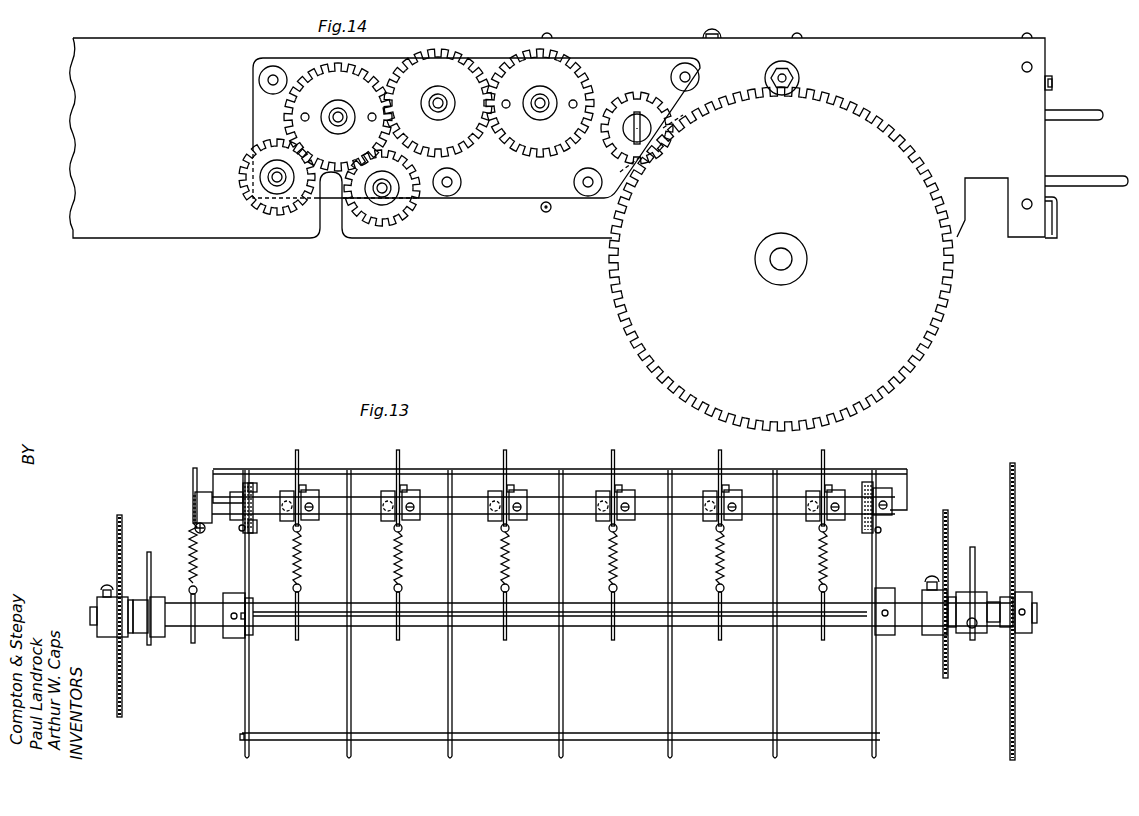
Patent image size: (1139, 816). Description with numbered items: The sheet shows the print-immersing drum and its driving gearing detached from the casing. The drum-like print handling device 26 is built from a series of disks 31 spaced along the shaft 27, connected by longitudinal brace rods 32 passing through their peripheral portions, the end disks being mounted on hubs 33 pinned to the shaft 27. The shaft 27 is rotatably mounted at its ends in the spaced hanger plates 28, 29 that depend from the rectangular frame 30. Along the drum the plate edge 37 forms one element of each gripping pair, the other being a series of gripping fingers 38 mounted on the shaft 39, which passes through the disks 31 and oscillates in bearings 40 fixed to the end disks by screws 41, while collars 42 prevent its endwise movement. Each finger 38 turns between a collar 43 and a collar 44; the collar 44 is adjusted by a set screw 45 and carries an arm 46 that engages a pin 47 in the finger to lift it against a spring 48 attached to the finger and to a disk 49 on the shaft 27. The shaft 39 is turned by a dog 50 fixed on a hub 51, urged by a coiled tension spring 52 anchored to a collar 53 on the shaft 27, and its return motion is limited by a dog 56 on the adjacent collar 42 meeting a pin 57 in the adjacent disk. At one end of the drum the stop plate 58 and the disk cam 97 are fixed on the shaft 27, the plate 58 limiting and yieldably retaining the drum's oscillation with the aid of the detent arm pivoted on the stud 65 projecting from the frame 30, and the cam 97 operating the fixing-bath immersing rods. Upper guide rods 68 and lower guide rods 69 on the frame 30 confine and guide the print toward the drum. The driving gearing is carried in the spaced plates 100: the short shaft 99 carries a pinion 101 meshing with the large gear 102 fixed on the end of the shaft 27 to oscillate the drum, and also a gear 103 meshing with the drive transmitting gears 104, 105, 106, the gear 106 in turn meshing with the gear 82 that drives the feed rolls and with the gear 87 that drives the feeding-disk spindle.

In FIG. 14, the rectangular frame 30 is at (1042, 52).
In FIG. 14, the spaced plates 100 is at (262, 100).
In FIG. 14, the drive transmitting gear 106 is at (340, 78).
In FIG. 14, the drive transmitting gear 105 is at (455, 76).
In FIG. 14, the drive transmitting gear 104 is at (572, 75).
In FIG. 14, the gear 103 is at (672, 82).
In FIG. 14, the pinion 101 is at (640, 112).
In FIG. 14, the short shaft 99 is at (630, 137).
In FIG. 14, the gear 87 is at (244, 172).
In FIG. 14, the gear 82 is at (415, 205).
In FIG. 14, the stud 65 is at (797, 72).
In FIG. 14, the large gear 102 is at (612, 268).
In FIG. 13, the large gear 102 is at (1018, 526).
In FIG. 14, the shaft 27 is at (786, 258).
In FIG. 13, the shaft 27 is at (1038, 612).
In FIG. 14, the upper guide rods 68 is at (1083, 112).
In FIG. 14, the lower guide rods 69 is at (1090, 178).
In FIG. 13, the print handling device 26 is at (284, 462).
In FIG. 13, the plate edge 37 is at (658, 470).
In FIG. 13, the gripping fingers 38 is at (300, 454).
In FIG. 13, the shaft 39 is at (910, 498).
In FIG. 13, the bearings 40 is at (258, 526).
In FIG. 13, the screws 41 is at (250, 488).
In FIG. 13, the collars 42 is at (236, 518).
In FIG. 13, the collar 43 is at (284, 494).
In FIG. 13, the collar 44 is at (310, 507).
In FIG. 13, the set screw 45 is at (412, 507).
In FIG. 13, the arm 46 is at (312, 528).
In FIG. 13, the pin 47 is at (304, 489).
In FIG. 13, the spring 48 is at (302, 570).
In FIG. 13, the disk 49 is at (300, 636).
In FIG. 13, the dog 50 is at (176, 478).
In FIG. 13, the hub 51 is at (200, 520).
In FIG. 13, the coiled tension spring 52 is at (198, 582).
In FIG. 13, the collar 53 is at (192, 642).
In FIG. 13, the dog 56 is at (233, 498).
In FIG. 13, the pin 57 is at (240, 540).
In FIG. 13, the hanger plate 29 is at (150, 556).
In FIG. 13, the disk cam 97 is at (122, 700).
In FIG. 13, the hubs 33 is at (236, 640).
In FIG. 13, the brace rods 32 is at (602, 627).
In FIG. 13, the disks 31 is at (345, 708).
In FIG. 13, the stop plate 58 is at (950, 670).
In FIG. 13, the hanger plate 28 is at (976, 552).